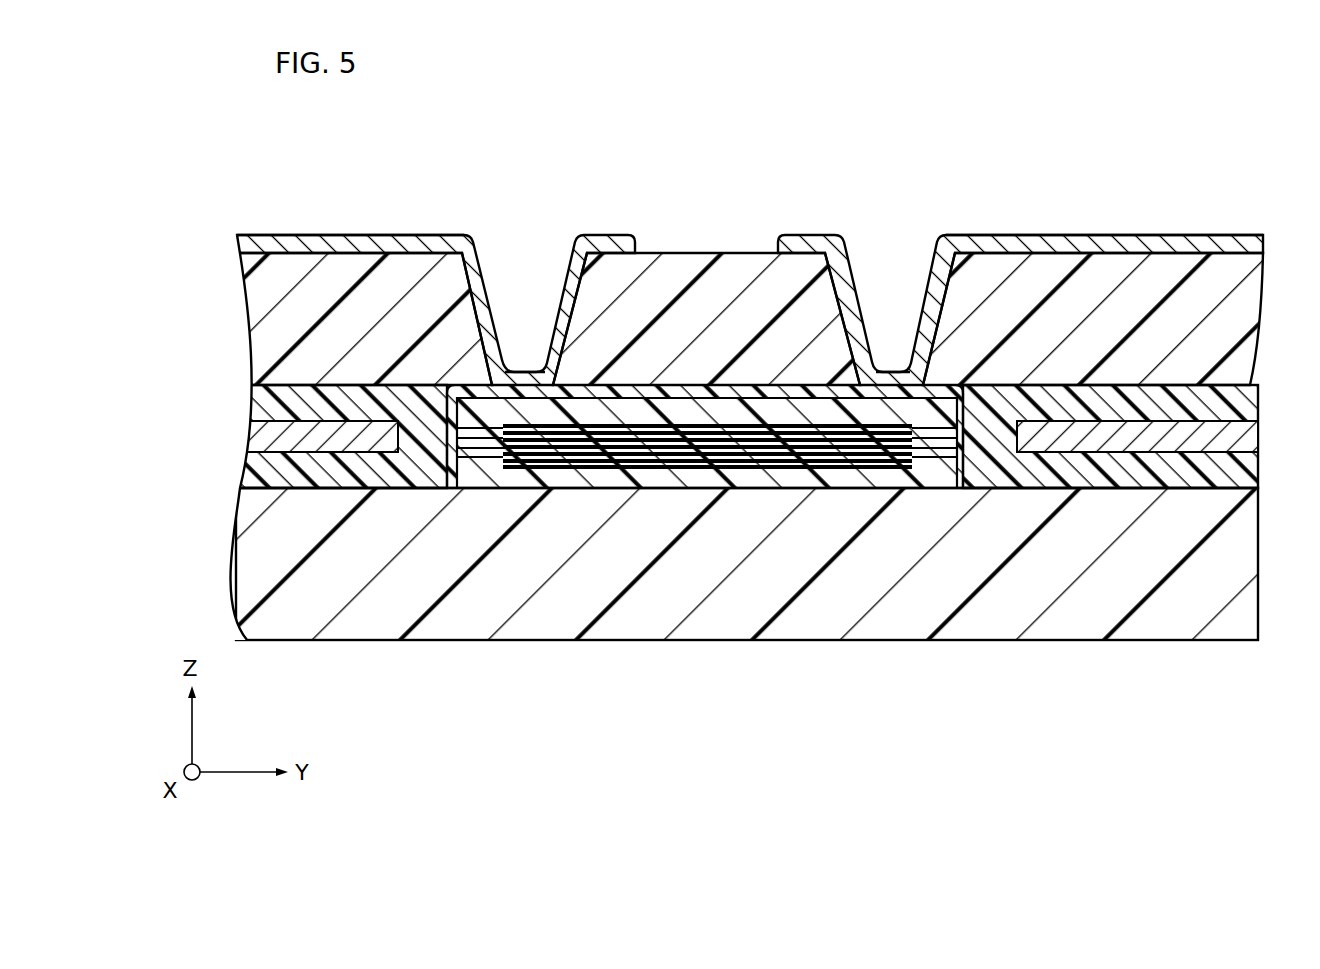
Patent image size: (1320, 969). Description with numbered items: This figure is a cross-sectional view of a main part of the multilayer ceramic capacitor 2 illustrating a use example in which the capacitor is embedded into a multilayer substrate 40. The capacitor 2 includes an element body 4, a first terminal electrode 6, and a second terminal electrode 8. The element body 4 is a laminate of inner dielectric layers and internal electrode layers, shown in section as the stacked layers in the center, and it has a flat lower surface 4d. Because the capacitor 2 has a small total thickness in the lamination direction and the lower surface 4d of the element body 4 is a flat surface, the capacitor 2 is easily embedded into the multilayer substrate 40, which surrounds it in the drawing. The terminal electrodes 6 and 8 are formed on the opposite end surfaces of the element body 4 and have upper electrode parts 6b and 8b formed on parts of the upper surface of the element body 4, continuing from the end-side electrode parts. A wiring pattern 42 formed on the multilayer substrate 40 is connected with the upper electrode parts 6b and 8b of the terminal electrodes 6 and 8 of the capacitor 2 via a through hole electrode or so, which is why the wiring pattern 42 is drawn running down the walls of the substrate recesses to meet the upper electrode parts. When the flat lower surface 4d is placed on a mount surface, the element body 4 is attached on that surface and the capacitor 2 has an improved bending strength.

The multilayer ceramic capacitor 2 is at (723, 392).
The element body 4 is at (657, 490).
The lower surface 4d is at (748, 488).
The first terminal electrode 6 is at (477, 383).
The upper electrode part 6b is at (527, 397).
The second terminal electrode 8 is at (945, 383).
The upper electrode part 8b is at (893, 393).
The multilayer substrate 40 is at (1130, 235).
The wiring pattern 42 is at (285, 235).